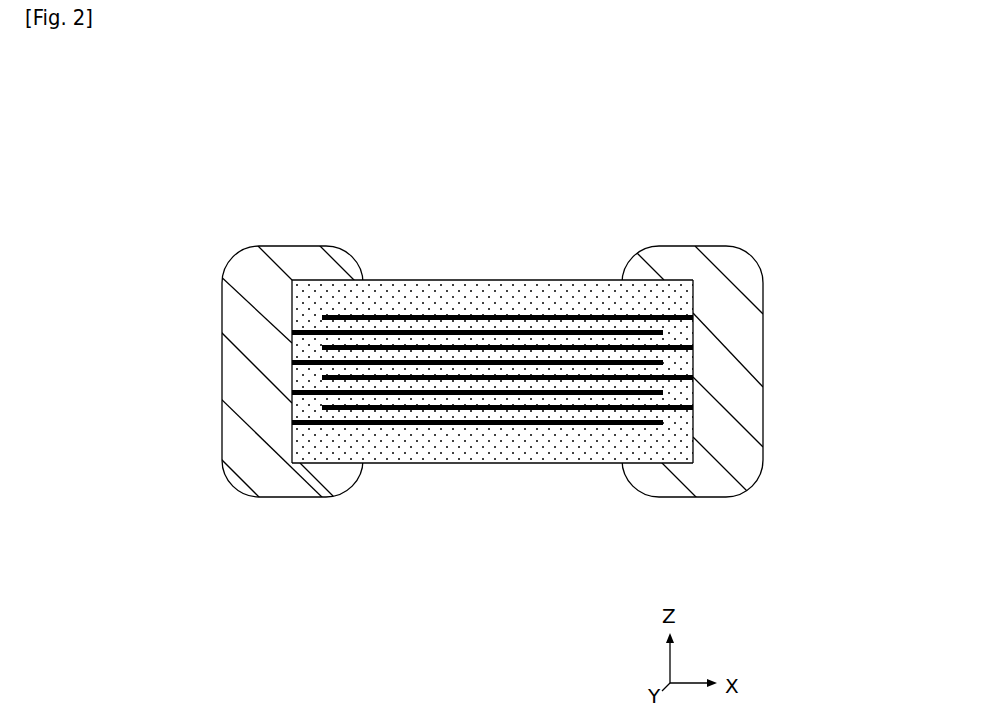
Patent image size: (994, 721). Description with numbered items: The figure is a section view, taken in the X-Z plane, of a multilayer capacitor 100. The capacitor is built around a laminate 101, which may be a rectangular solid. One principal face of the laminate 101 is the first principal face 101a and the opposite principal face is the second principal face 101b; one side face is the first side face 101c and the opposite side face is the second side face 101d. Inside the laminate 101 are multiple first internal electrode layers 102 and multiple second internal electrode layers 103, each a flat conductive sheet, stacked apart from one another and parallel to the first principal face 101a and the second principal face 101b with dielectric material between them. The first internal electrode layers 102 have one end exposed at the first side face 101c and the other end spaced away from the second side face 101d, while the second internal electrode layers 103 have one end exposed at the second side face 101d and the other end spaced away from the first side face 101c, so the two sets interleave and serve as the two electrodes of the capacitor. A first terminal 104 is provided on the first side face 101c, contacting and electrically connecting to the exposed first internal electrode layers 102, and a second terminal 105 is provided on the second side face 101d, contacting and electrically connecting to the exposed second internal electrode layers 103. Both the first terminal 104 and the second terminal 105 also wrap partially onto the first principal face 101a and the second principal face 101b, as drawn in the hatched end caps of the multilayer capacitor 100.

The multilayer capacitor 100 is at (494, 311).
The laminate 101 is at (494, 375).
The first principal face 101a is at (437, 278).
The second principal face 101b is at (443, 465).
The first side face 101c is at (292, 310).
The second side face 101d is at (693, 437).
The first internal electrode layers 102 is at (292, 362).
The second internal electrode layers 103 is at (693, 315).
The first terminal 104 is at (288, 253).
The second terminal 105 is at (678, 257).